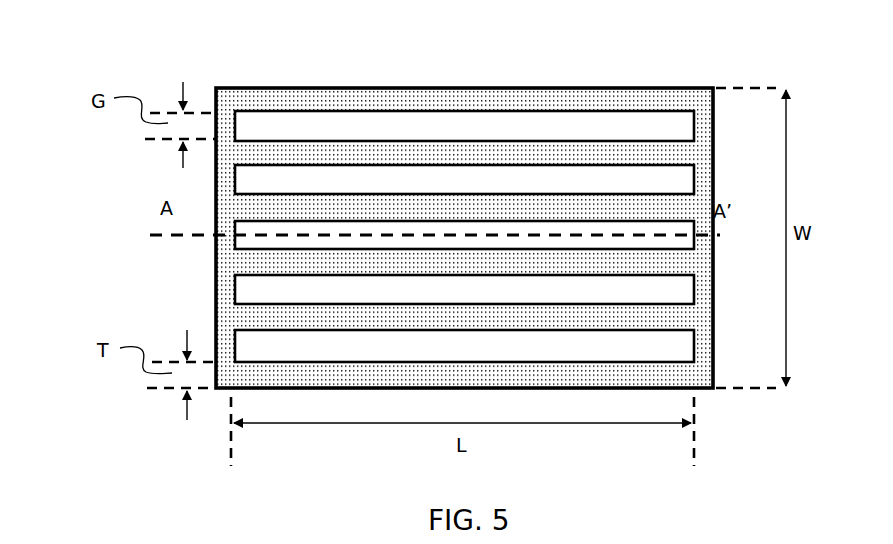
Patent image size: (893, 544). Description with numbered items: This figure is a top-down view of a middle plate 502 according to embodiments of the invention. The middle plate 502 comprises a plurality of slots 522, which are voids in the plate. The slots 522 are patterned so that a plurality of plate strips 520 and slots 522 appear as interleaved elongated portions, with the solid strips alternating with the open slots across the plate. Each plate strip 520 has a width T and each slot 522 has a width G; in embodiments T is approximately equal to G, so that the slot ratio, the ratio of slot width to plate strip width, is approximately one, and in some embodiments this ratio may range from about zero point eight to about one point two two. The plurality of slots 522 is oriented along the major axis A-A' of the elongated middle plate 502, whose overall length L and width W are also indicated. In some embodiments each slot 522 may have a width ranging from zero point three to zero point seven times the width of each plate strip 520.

The middle plate 502 is at (382, 196).
The plate strip 520 is at (272, 102).
The slot 522 is at (540, 127).